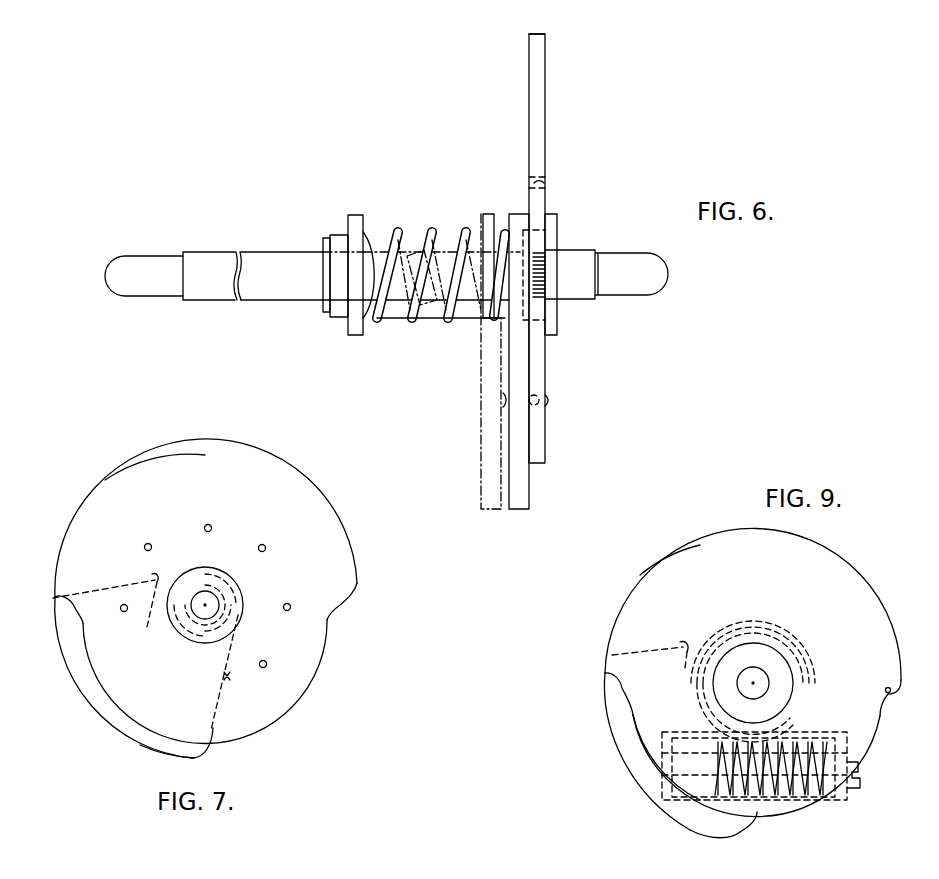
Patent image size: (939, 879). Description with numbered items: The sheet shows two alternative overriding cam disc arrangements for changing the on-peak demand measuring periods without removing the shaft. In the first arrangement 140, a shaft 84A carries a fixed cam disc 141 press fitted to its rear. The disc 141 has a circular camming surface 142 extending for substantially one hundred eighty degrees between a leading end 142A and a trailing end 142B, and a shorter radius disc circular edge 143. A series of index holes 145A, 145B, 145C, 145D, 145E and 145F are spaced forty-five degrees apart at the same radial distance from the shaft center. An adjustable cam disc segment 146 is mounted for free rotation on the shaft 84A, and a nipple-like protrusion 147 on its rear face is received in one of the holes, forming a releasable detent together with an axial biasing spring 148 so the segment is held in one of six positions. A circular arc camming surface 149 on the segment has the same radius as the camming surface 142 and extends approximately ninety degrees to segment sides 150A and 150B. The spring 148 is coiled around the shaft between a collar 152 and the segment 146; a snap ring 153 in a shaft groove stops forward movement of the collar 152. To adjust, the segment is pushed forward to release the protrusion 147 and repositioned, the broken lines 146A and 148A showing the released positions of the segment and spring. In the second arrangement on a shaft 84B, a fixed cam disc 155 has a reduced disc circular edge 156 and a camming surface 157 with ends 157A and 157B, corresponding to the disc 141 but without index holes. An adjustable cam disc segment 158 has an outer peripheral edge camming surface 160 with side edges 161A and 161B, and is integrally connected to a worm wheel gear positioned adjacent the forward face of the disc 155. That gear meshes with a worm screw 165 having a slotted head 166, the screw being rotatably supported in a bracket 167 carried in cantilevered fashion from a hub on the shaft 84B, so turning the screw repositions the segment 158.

In FIG. 6, the shaft 84A is at (266, 258).
In FIG. 7, the shaft 84A is at (227, 596).
In FIG. 9, the shaft 84B is at (758, 683).
In FIG. 6, the overriding cam disc arrangement 140 is at (449, 329).
In FIG. 6, the fixed cam disc 141 is at (546, 86).
In FIG. 7, the fixed cam disc 141 is at (330, 715).
In FIG. 6, the circular camming surface 142 is at (528, 34).
In FIG. 7, the circular camming surface 142 is at (131, 469).
In FIG. 7, the camming surface leading end 142A is at (57, 640).
In FIG. 7, the camming surface trailing end 142B is at (346, 598).
In FIG. 7, the shorter radius disc circular edge 143 is at (240, 727).
In FIG. 6, the index hole 145A is at (547, 397).
In FIG. 7, the index hole 145A is at (128, 590).
In FIG. 7, the index hole 145B is at (149, 544).
In FIG. 6, the index hole 145C is at (548, 183).
In FIG. 7, the index hole 145C is at (208, 525).
In FIG. 7, the index hole 145D is at (264, 545).
In FIG. 7, the index hole 145E is at (288, 603).
In FIG. 7, the index hole 145F is at (263, 660).
In FIG. 6, the adjustable cam disc segment 146 is at (530, 490).
In FIG. 7, the adjustable cam disc segment 146 is at (80, 680).
In FIG. 6, the broken-line position of cam segment 146A is at (481, 457).
In FIG. 6, the nipple-like protrusion 147 is at (543, 402).
In FIG. 7, the nipple-like protrusion 147 is at (124, 612).
In FIG. 6, the axial biasing spring 148 is at (431, 231).
In FIG. 6, the broken-line position of spring 148A is at (450, 242).
In FIG. 7, the circular arc camming surface 149 is at (106, 718).
In FIG. 7, the segment side 150A is at (224, 675).
In FIG. 7, the segment side 150B is at (114, 611).
In FIG. 6, the collar 152 is at (356, 215).
In FIG. 6, the snap ring 153 is at (327, 313).
In FIG. 9, the fixed cam disc 155 is at (861, 625).
In FIG. 9, the reduced disc circular edge 156 is at (624, 726).
In FIG. 9, the camming surface 157 is at (657, 566).
In FIG. 9, the camming surface end 157A is at (619, 688).
In FIG. 9, the camming surface end 157B is at (887, 686).
In FIG. 9, the adjustable cam disc segment 158 is at (628, 755).
In FIG. 9, the outer peripheral edge camming surface 160 is at (648, 792).
In FIG. 9, the side edge 161A is at (758, 818).
In FIG. 9, the side edge 161B is at (690, 676).
In FIG. 9, the worm screw 165 is at (792, 735).
In FIG. 9, the slotted head 166 is at (855, 789).
In FIG. 9, the bracket 167 is at (835, 728).